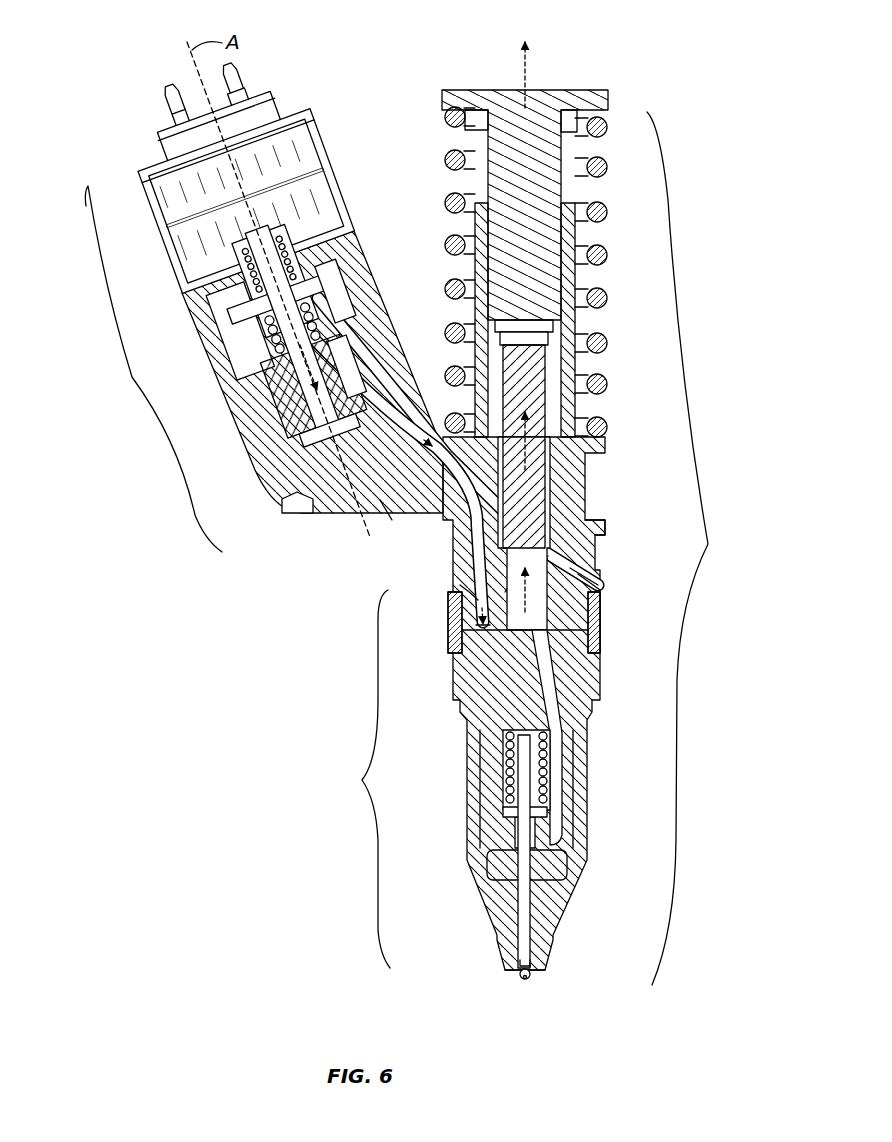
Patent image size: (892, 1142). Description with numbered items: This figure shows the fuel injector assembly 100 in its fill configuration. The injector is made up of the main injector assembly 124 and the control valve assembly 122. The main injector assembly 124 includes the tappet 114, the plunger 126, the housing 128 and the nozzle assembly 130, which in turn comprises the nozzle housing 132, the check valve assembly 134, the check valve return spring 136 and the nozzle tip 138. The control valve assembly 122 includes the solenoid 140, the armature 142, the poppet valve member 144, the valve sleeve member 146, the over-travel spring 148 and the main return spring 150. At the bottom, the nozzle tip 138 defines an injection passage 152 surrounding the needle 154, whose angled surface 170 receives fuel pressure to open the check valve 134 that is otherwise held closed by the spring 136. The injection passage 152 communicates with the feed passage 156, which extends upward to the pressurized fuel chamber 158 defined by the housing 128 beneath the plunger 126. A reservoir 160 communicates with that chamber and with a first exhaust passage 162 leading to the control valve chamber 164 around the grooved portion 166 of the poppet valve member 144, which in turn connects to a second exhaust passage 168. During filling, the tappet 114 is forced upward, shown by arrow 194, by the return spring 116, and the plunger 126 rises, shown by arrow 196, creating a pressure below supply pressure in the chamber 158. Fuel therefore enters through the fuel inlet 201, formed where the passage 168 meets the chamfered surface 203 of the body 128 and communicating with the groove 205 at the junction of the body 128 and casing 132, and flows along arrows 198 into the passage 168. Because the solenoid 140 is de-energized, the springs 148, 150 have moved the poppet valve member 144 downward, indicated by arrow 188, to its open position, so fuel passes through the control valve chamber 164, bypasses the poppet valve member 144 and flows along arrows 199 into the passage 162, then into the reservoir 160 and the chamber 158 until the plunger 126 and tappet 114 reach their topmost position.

The fuel injector assembly 100 is at (671, 46).
The tappet 114 is at (541, 106).
The return spring 116 is at (603, 172).
The control valve assembly 122 is at (132, 377).
The main injector assembly 124 is at (708, 544).
The plunger 126 is at (530, 382).
The housing 128 is at (585, 622).
The nozzle assembly 130 is at (362, 780).
The nozzle housing 132 is at (453, 607).
The check valve assembly 134 is at (510, 837).
The check valve return spring 136 is at (503, 770).
The nozzle tip 138 is at (543, 955).
The solenoid 140 is at (308, 153).
The armature 142 is at (303, 230).
The poppet valve member 144 is at (370, 357).
The valve sleeve member 146 is at (267, 460).
The over-travel spring 148 is at (347, 280).
The main return spring 150 is at (258, 243).
The injection passage 152 is at (513, 953).
The needle 154 is at (523, 885).
The feed passage 156 is at (560, 795).
The pressurized fuel chamber 158 is at (583, 517).
The reservoir 160 is at (473, 680).
The first exhaust passage 162 is at (353, 487).
The control valve chamber 164 is at (280, 433).
The grooved portion 166 is at (353, 337).
The second exhaust passage 168 is at (385, 505).
The angled surface 170 is at (533, 972).
The arrow 188 is at (263, 403).
The arrow 194 is at (519, 52).
The arrow 196 is at (543, 433).
The arrows 198 is at (402, 407).
The arrows 199 is at (350, 387).
The fuel inlet 201 is at (593, 580).
The chamfered surface 203 is at (605, 582).
The groove 205 is at (460, 587).